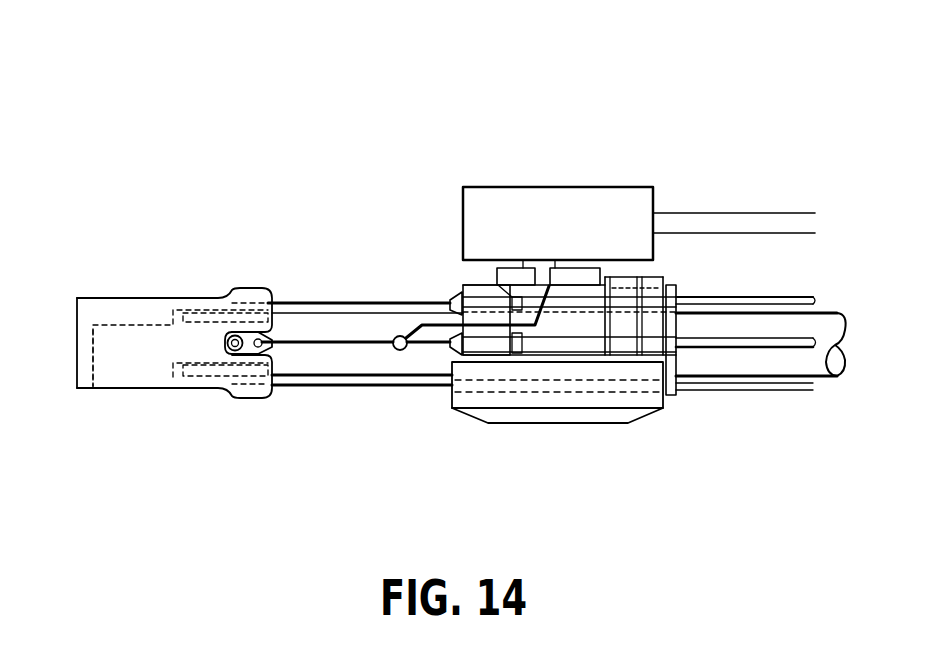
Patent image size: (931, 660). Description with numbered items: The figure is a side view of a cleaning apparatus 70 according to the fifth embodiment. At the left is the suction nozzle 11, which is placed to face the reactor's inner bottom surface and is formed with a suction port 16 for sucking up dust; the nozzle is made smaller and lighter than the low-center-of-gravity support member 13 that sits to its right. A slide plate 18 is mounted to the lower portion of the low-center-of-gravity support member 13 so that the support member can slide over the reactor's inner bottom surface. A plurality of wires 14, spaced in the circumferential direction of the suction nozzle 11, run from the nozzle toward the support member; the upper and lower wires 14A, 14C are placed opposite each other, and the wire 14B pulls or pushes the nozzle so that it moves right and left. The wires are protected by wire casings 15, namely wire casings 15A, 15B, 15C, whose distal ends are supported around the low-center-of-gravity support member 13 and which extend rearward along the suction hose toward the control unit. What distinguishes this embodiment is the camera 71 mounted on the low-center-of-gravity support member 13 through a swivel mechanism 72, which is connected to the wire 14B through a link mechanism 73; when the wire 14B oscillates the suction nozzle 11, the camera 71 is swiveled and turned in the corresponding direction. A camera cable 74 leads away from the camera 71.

The cleaning apparatus 70 is at (690, 98).
The camera 71 is at (557, 187).
The swivel mechanism 72 is at (604, 278).
The link mechanism 73 is at (495, 352).
The camera cable 74 is at (738, 213).
The suction nozzle 11 is at (148, 298).
The suction port 16 is at (136, 390).
The low-center-of-gravity support member 13 is at (628, 460).
The wires 14 is at (402, 470).
The wire 14A is at (330, 305).
The wire 14B is at (362, 347).
The wire 14C is at (395, 388).
The wire casings 15 is at (832, 470).
The wire casing 15A is at (760, 305).
The wire casing 15B is at (728, 340).
The wire casing 15C is at (693, 392).
The slide plate 18 is at (558, 423).